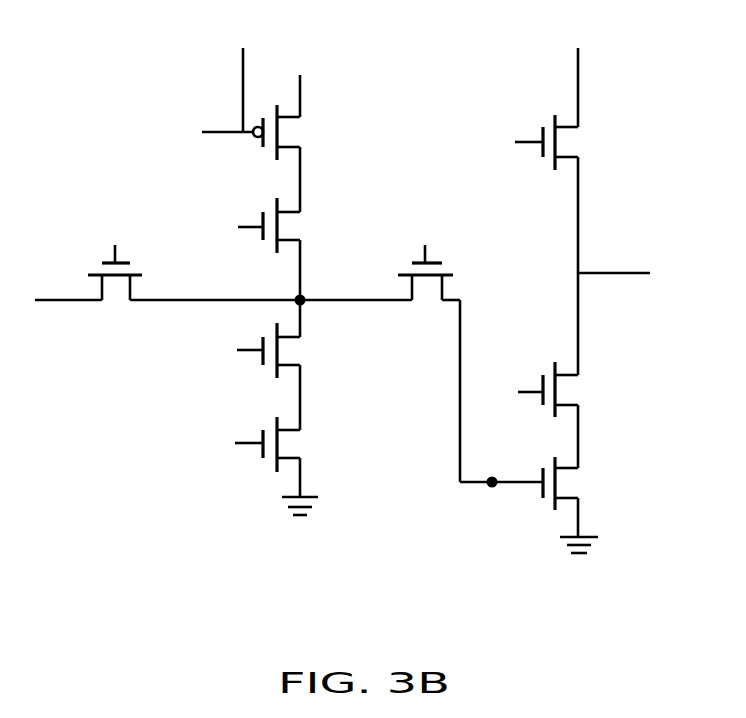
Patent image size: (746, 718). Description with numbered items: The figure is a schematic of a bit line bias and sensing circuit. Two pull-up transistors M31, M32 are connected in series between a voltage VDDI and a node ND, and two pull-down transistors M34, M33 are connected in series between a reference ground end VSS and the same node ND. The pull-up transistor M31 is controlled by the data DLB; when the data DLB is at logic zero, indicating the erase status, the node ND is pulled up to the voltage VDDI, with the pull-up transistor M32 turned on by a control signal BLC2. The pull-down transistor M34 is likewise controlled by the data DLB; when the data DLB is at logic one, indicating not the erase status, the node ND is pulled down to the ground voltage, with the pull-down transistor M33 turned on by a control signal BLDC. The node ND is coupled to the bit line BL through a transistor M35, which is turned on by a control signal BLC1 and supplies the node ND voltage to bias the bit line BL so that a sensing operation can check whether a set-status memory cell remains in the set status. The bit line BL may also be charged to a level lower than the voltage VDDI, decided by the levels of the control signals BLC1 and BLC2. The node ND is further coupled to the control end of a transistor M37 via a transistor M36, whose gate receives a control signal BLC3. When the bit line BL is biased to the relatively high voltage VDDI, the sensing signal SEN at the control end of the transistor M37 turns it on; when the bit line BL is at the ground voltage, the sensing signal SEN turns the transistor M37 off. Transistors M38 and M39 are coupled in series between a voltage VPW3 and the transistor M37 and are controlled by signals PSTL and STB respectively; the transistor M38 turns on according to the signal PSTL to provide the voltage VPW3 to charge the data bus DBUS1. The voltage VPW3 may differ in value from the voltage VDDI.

The pull-up transistor M31 is at (269, 158).
The pull-up transistor M32 is at (303, 249).
The pull-down transistor M33 is at (305, 365).
The pull-down transistor M34 is at (305, 457).
The transistor M35 is at (115, 301).
The transistor M36 is at (429, 372).
The transistor M37 is at (582, 497).
The transistor M38 is at (582, 245).
The transistor M39 is at (582, 415).
The node ND is at (303, 294).
The bit line BL is at (63, 303).
The data DLB is at (228, 236).
The voltage VDDI is at (300, 81).
The reference ground end VSS is at (439, 547).
The control signal BLC1 is at (114, 238).
The control signal BLC2 is at (224, 228).
The bit line clamp signal 3 BLC3 is at (426, 237).
The control signal BLDC is at (224, 353).
The voltage VPW3 is at (584, 71).
The signal PSTL is at (505, 143).
The data bus DBUS1 is at (623, 272).
The signal STB is at (510, 392).
The sensing signal SEN is at (501, 464).